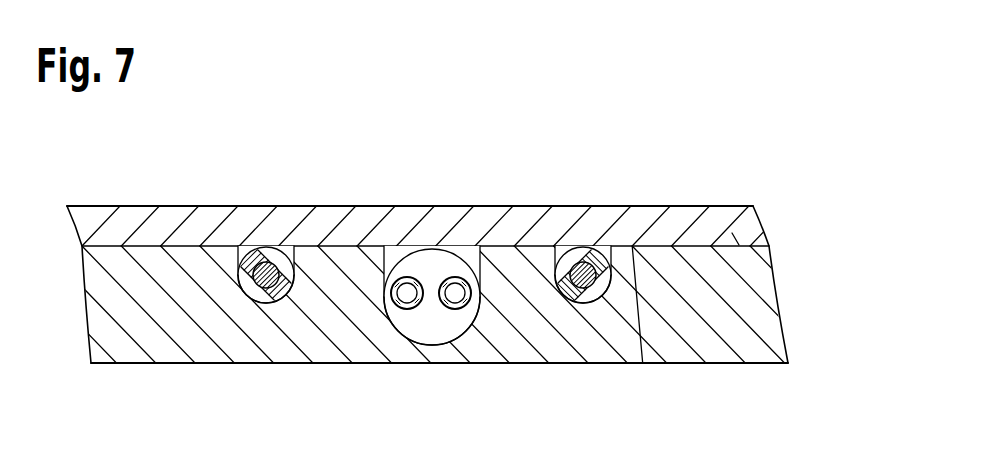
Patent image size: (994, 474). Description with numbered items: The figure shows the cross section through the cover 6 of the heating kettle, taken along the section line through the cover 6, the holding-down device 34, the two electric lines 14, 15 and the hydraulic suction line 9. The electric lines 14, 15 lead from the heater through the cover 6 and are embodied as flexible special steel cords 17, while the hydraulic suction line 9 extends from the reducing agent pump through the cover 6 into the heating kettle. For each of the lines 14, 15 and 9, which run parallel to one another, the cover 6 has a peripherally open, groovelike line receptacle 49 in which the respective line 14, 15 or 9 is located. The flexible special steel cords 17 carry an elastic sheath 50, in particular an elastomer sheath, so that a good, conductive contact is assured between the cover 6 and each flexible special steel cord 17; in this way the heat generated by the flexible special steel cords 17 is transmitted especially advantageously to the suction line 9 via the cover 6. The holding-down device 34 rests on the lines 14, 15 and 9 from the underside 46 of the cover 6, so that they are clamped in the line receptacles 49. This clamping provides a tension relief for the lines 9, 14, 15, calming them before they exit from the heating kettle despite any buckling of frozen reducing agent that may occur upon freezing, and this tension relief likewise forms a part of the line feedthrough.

The cover 6 is at (132, 317).
The hydraulic suction line 9 is at (425, 325).
The electric line 14 is at (588, 256).
The electric line 15 is at (274, 258).
The flexible special steel cord 17 is at (459, 209).
The holding-down device 34 is at (133, 206).
The underside 46 is at (746, 238).
The line receptacle 49 is at (247, 258).
The elastic sheath 50 is at (255, 302).